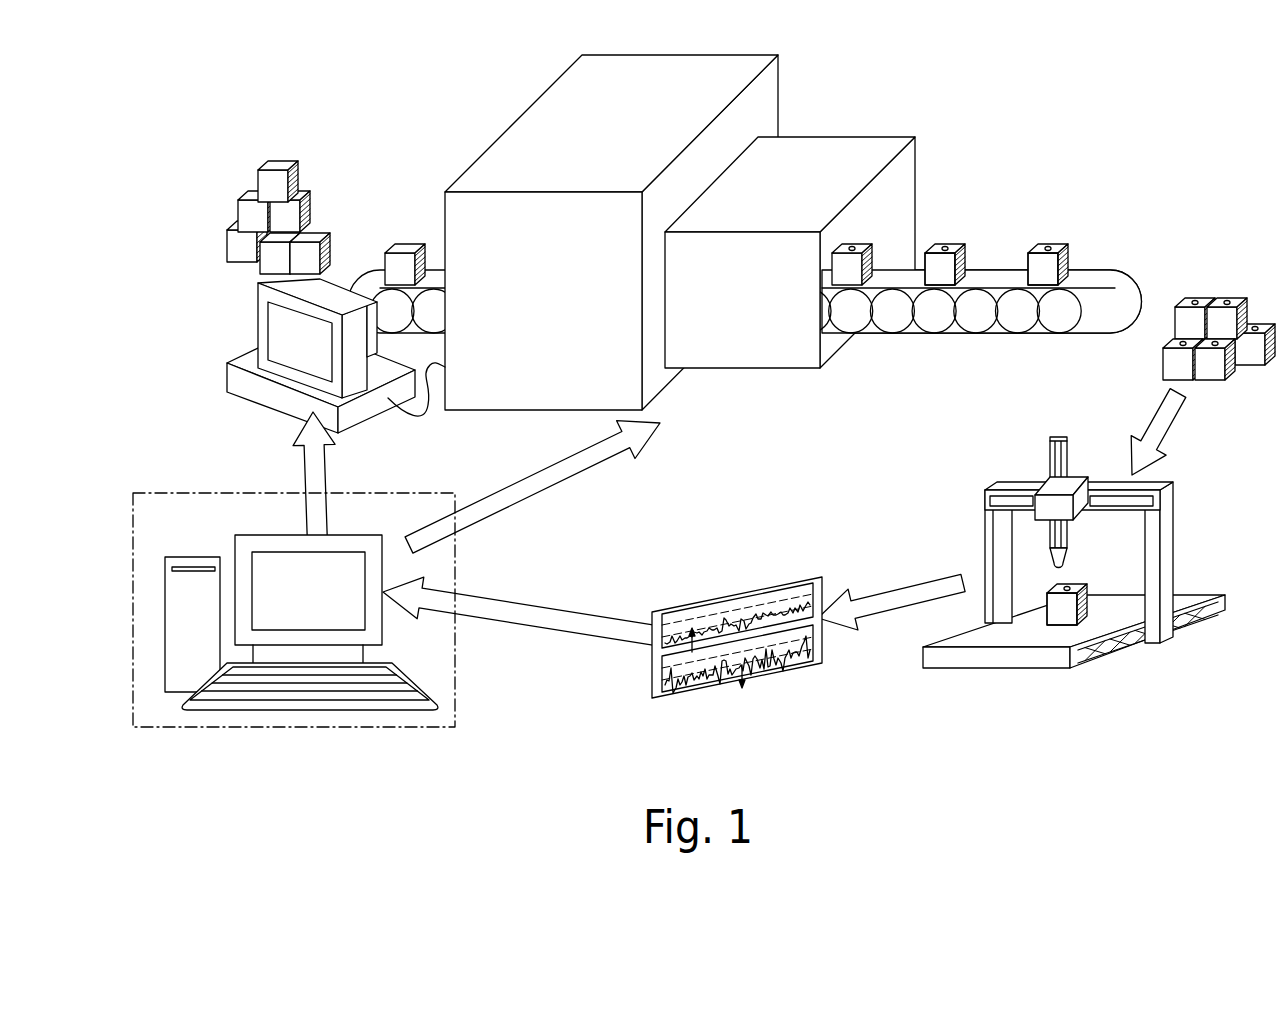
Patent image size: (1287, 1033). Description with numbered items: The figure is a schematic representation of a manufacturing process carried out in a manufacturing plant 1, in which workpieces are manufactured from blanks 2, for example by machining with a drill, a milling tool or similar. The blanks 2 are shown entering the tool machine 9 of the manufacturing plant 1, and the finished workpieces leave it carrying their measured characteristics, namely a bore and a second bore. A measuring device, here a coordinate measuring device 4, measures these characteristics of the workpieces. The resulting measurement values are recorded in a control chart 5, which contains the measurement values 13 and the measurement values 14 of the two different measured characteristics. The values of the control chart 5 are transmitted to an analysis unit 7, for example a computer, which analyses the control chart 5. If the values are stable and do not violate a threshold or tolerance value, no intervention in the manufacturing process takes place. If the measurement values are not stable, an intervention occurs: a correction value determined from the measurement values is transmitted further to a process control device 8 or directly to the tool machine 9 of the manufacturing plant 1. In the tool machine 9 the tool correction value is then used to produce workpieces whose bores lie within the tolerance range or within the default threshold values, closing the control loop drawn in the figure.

The manufacturing plant 1 is at (343, 96).
The blank 2 is at (408, 247).
The coordinate measuring device 4 is at (1074, 583).
The control chart 5 is at (722, 660).
The analysis unit 7 is at (283, 565).
The process control device 8 is at (240, 318).
The tool machine 9 is at (738, 345).
The measurement values 13 is at (682, 693).
The measurement values 14 is at (743, 680).